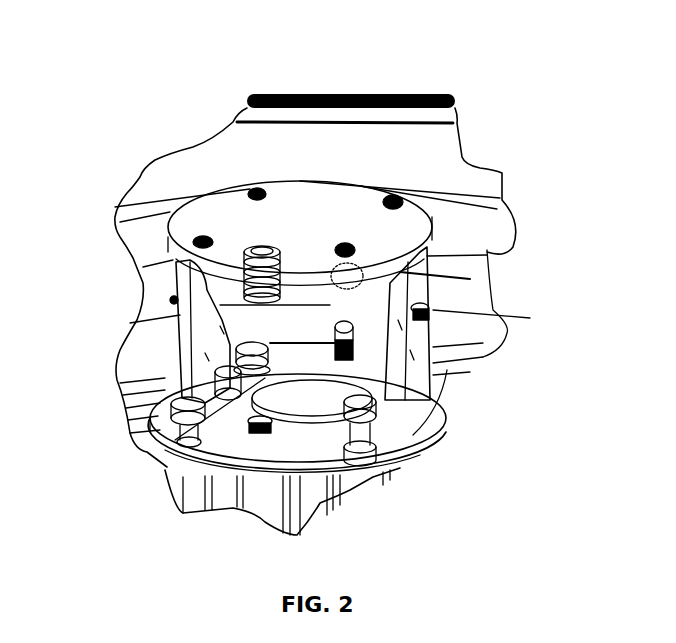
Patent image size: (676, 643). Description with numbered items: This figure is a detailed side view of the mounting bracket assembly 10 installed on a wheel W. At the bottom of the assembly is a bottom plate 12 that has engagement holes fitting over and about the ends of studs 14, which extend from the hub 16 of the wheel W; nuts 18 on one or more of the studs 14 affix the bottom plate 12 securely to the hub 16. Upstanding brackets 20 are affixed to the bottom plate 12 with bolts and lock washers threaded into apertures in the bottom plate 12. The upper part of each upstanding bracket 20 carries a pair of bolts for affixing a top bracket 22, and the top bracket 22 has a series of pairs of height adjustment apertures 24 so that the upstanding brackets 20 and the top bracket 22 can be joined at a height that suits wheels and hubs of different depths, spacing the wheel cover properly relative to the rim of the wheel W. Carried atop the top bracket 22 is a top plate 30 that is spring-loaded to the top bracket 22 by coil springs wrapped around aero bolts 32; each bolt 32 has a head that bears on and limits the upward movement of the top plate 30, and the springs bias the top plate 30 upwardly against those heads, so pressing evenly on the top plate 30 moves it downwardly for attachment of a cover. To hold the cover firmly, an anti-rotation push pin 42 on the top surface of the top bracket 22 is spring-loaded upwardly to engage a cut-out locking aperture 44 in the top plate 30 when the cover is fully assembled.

The wheel W is at (440, 155).
The bracket 10 is at (453, 248).
The bottom plate 12 is at (400, 426).
The studs 14 is at (188, 365).
The hub 16 is at (320, 507).
The nuts 18 is at (380, 437).
The upstanding brackets 20 is at (197, 343).
The top bracket 22 is at (470, 279).
The height adjustment apertures 24 is at (410, 293).
The top plate 30 is at (315, 200).
The aero bolts 32 is at (385, 207).
The anti-rotation push pin 42 is at (266, 251).
The cut-out locking aperture 44 is at (249, 262).